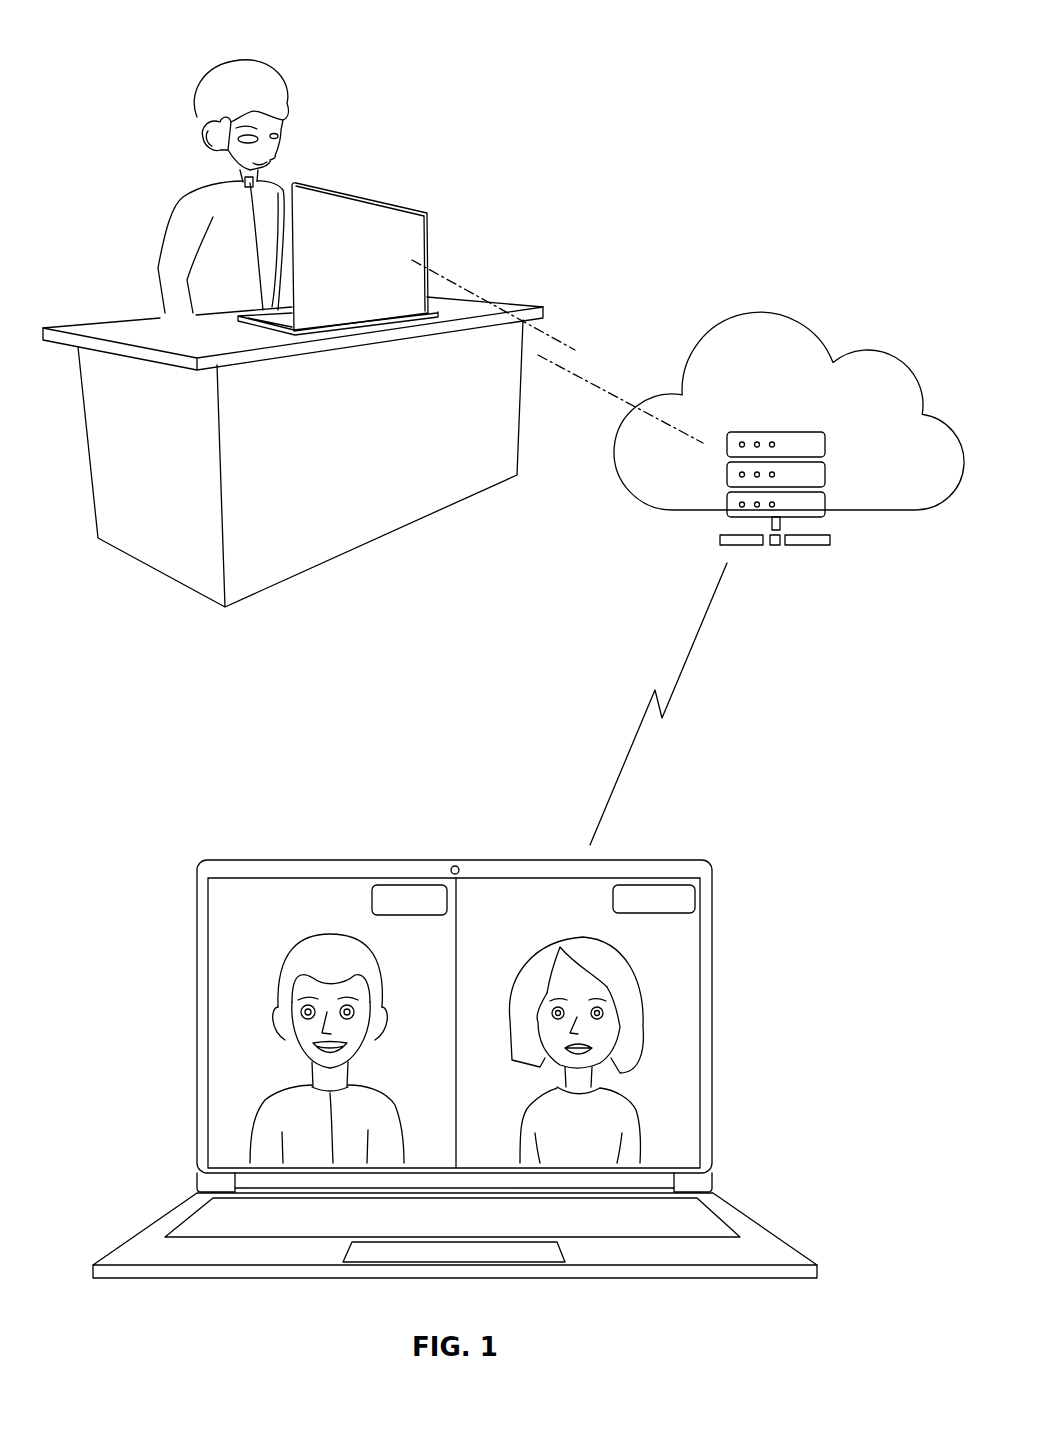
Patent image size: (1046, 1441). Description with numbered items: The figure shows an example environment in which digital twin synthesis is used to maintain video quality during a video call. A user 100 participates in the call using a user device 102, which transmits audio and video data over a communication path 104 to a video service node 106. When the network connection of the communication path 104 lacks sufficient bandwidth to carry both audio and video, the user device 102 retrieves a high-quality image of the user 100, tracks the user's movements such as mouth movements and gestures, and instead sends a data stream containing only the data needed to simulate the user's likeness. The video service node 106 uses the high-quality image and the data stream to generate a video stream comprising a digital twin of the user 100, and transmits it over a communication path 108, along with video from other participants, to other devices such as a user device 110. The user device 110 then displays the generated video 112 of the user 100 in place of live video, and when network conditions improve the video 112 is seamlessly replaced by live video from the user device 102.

The user 100 is at (275, 93).
The user device 102 is at (420, 230).
The communication path 104 is at (580, 362).
The video service node 106 is at (777, 432).
The communication path 108 is at (672, 658).
The user device 110 is at (263, 856).
The generated video 112 is at (238, 1003).